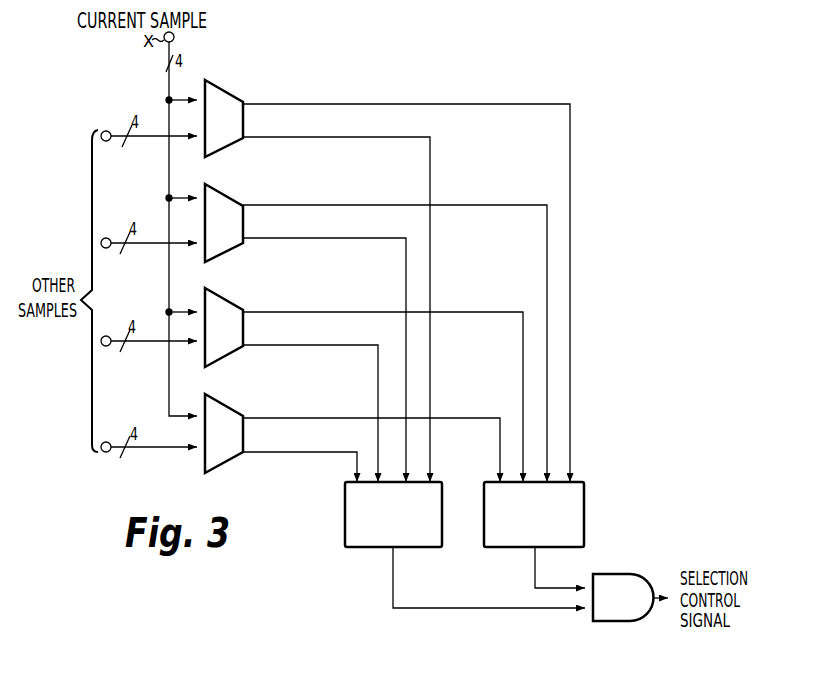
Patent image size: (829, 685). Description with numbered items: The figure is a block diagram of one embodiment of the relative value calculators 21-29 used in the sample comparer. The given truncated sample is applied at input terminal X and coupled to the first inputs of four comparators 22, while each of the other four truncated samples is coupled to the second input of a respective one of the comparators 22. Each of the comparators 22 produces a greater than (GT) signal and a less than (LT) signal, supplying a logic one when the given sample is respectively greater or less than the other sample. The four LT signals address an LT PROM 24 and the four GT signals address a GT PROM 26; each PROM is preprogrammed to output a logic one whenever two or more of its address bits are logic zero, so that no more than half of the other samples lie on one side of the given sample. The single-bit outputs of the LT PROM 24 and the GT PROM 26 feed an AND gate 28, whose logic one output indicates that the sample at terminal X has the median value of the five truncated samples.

The relative value calculators 21-29 is at (520, 76).
The comparators 22 is at (258, 65).
The LT PROM 24 is at (345, 541).
The GT PROM 26 is at (484, 541).
The AND gate 28 is at (613, 623).